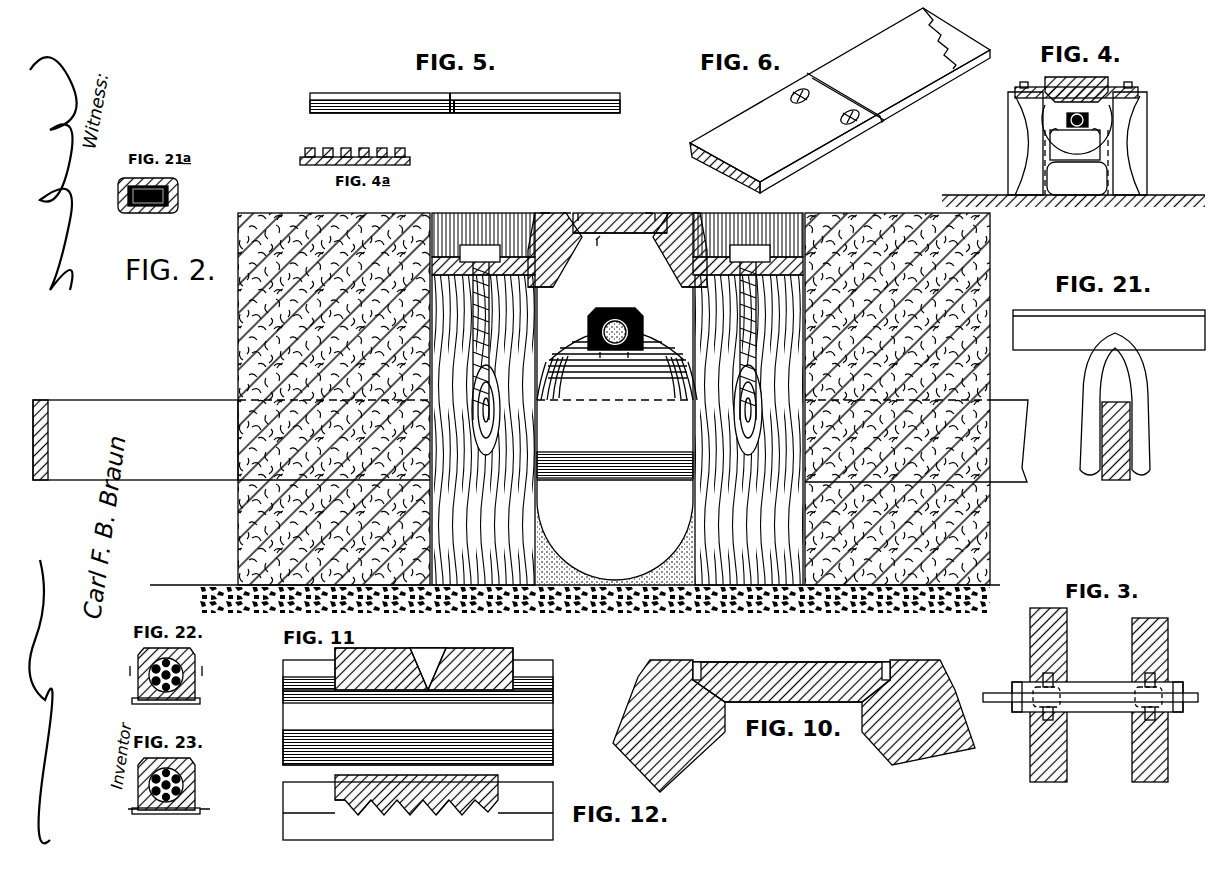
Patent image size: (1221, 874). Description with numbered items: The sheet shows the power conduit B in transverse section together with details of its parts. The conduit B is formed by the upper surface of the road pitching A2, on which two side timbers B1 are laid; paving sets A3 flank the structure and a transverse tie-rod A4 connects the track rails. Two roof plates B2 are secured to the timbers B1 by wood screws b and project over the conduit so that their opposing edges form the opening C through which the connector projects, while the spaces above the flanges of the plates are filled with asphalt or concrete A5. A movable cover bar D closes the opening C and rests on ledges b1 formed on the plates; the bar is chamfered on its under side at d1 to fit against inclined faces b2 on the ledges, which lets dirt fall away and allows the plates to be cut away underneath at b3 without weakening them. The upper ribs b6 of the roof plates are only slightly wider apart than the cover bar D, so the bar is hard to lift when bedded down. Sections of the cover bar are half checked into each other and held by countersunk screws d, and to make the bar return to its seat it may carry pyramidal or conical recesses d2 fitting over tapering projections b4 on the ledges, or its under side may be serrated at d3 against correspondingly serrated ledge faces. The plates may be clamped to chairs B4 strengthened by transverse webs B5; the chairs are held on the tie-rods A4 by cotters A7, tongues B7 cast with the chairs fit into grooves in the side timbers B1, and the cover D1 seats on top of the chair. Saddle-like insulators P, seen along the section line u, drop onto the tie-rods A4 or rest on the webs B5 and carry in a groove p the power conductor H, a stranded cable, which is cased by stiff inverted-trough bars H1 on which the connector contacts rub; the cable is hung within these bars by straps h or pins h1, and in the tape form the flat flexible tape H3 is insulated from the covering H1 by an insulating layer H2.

In FIG. 2, the road pitching A2 is at (578, 610).
In FIG. 2, the paving sets A3 is at (240, 362).
In FIG. 2, the transverse tie-rod A4 is at (646, 478).
In FIG. 21, the transverse tie-rod A4 is at (1131, 478).
In FIG. 3, the transverse tie-rod A4 is at (999, 692).
In FIG. 2, the asphalt or concrete filling A5 is at (454, 218).
In FIG. 3, the cotter A7 is at (1021, 712).
In FIG. 2, the power conduit B is at (615, 436).
In FIG. 2, the side timber B1 is at (617, 430).
In FIG. 4, the side timber B1 is at (1015, 146).
In FIG. 3, the side timber B1 is at (1062, 660).
In FIG. 2, the roof plate B2 is at (558, 260).
In FIG. 11, the roof plate B2 is at (547, 730).
In FIG. 12, the roof plate B2 is at (289, 811).
In FIG. 10, the roof plate B2 is at (885, 750).
In FIG. 4, the chair B4 is at (1130, 134).
In FIG. 3, the chair B4 is at (1096, 690).
In FIG. 4, the transverse web B5 is at (1066, 166).
In FIG. 3, the tongue B7 is at (1148, 674).
In FIG. 2, the opening C is at (620, 244).
In FIG. 2, the cover bar D is at (603, 203).
In FIG. 5, the cover bar D is at (344, 98).
In FIG. 4a, the cover bar D is at (318, 166).
In FIG. 6, the cover bar D is at (840, 100).
In FIG. 11, the cover bar D is at (424, 659).
In FIG. 12, the cover bar D is at (416, 795).
In FIG. 10, the cover bar D is at (819, 664).
In FIG. 4, the cover cap D1 is at (1076, 90).
In FIG. 2, the power conductor H is at (598, 364).
In FIG. 22, the power conductor H is at (164, 690).
In FIG. 23, the power conductor H is at (160, 802).
In FIG. 2, the stiff bar H1 is at (604, 312).
In FIG. 4, the stiff bar H1 is at (1088, 118).
In FIG. 21a, the stiff bar H1 is at (178, 188).
In FIG. 21, the stiff bar H1 is at (1109, 330).
In FIG. 22, the stiff bar H1 is at (197, 657).
In FIG. 23, the stiff bar H1 is at (197, 769).
In FIG. 21a, the insulation H2 is at (162, 206).
In FIG. 21a, the flexible tape H3 is at (128, 206).
In FIG. 2, the insulator P is at (617, 383).
In FIG. 4, the insulator P is at (1076, 162).
In FIG. 21, the insulator P is at (1115, 404).
In FIG. 2, the wood screw b is at (482, 248).
In FIG. 2, the ledge b1 is at (632, 246).
In FIG. 11, the ledge b1 is at (517, 707).
In FIG. 2, the inclined face b2 is at (545, 216).
In FIG. 11, the inclined face b2 is at (314, 684).
In FIG. 12, the inclined face b2 is at (340, 802).
In FIG. 2, the cut-away b3 is at (553, 279).
In FIG. 12, the cut-away b3 is at (452, 812).
In FIG. 11, the projection b4 is at (436, 674).
In FIG. 10, the projection b4 is at (704, 664).
In FIG. 2, the upper rib b6 is at (565, 212).
In FIG. 6, the countersunk screw d is at (838, 118).
In FIG. 2, the chamfered part d1 is at (582, 217).
In FIG. 11, the recess d2 is at (418, 656).
In FIG. 12, the serration d3 is at (384, 812).
In FIG. 22, the strap h is at (198, 690).
In FIG. 23, the pin h1 is at (187, 804).
In FIG. 2, the groove p is at (622, 358).
In FIG. 2, the section line u is at (668, 342).